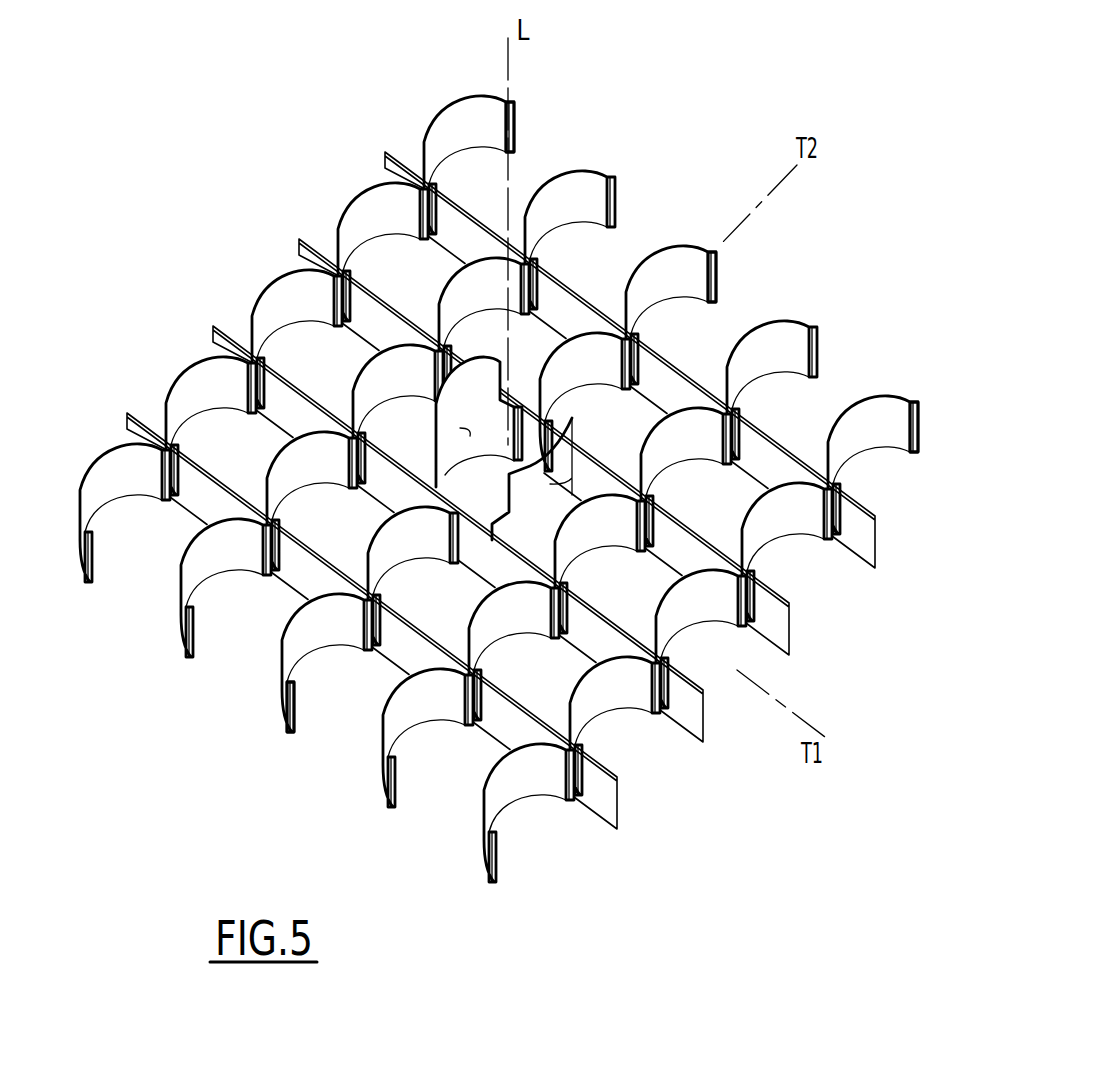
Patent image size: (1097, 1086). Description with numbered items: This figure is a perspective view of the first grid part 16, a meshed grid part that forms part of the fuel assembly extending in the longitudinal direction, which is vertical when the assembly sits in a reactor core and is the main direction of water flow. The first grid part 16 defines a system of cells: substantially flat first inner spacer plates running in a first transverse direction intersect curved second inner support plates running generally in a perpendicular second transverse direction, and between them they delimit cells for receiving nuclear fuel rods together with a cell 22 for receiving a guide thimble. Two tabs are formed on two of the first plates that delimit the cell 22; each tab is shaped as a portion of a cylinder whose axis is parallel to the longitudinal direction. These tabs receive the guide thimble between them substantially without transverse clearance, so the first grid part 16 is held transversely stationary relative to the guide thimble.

The first grid part 16 is at (499, 484).
The cell for receiving a guide thimble 22 is at (471, 503).